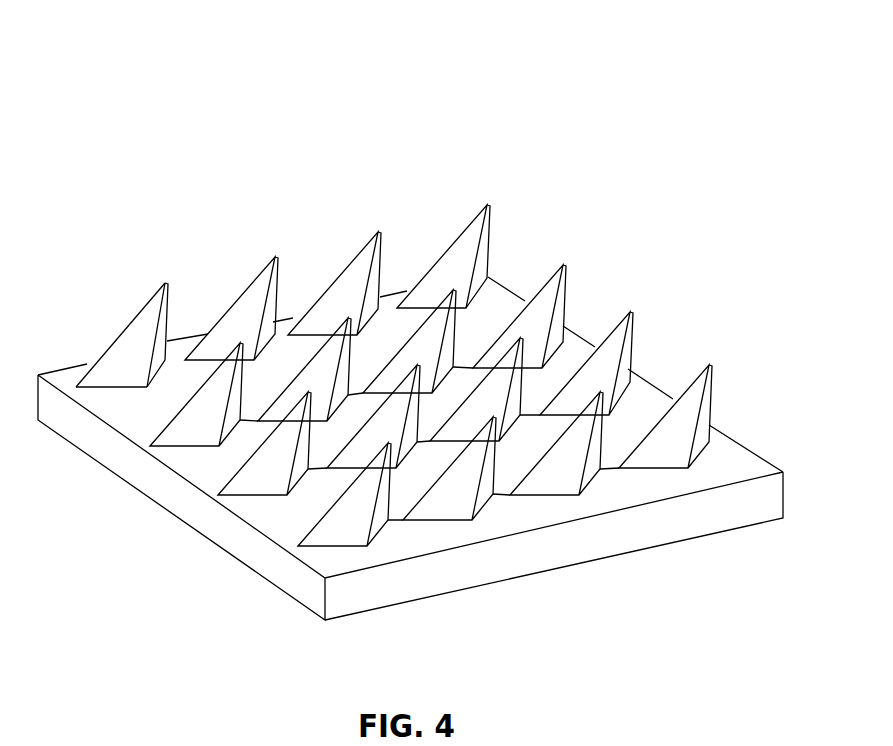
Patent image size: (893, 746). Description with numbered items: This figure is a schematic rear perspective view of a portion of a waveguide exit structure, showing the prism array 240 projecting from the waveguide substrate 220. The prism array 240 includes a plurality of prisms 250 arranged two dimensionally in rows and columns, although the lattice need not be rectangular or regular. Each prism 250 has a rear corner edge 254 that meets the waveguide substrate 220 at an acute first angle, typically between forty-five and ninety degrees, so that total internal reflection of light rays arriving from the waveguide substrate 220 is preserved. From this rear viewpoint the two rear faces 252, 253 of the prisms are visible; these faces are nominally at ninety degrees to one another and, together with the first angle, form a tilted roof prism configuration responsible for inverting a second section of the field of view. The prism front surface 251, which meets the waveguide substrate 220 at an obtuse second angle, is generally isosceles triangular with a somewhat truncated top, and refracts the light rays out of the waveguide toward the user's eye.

The waveguide substrate 220 is at (507, 562).
The prism array 240 is at (783, 127).
The prism 250 is at (133, 278).
The prism front surface 251 is at (100, 323).
The rear face 252 is at (147, 323).
The rear face 253 is at (163, 342).
The rear corner edge 254 is at (149, 362).